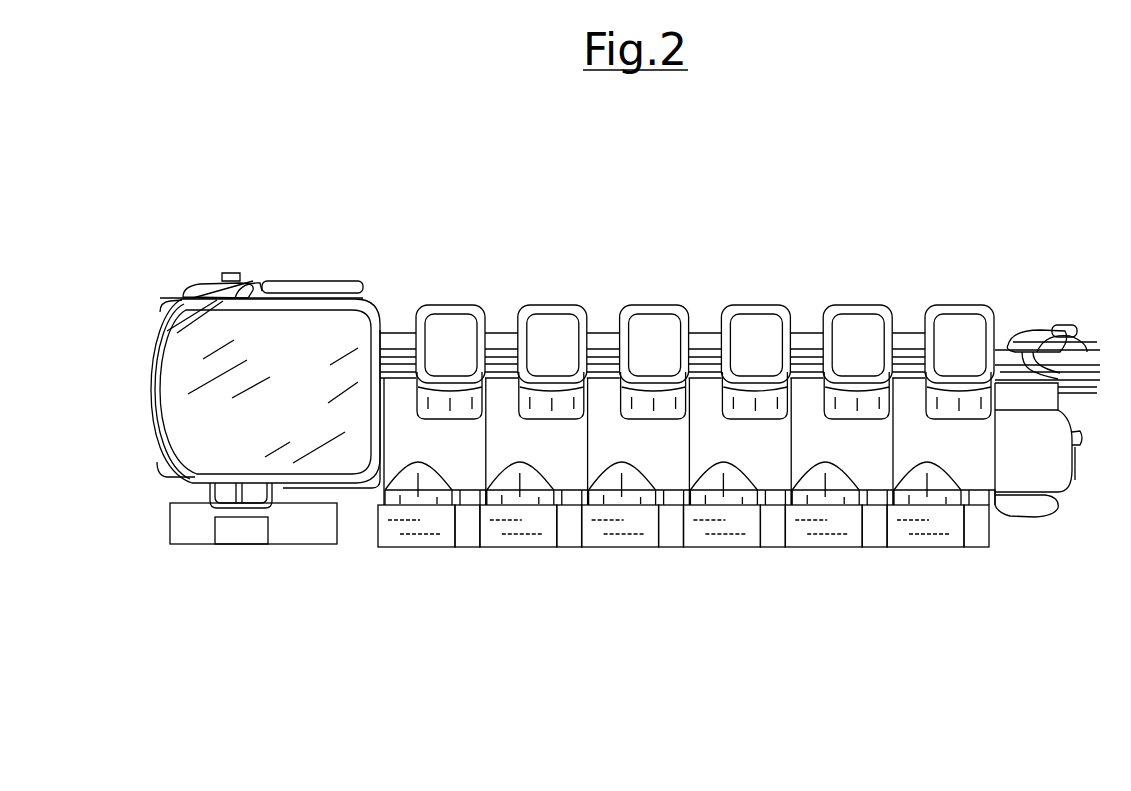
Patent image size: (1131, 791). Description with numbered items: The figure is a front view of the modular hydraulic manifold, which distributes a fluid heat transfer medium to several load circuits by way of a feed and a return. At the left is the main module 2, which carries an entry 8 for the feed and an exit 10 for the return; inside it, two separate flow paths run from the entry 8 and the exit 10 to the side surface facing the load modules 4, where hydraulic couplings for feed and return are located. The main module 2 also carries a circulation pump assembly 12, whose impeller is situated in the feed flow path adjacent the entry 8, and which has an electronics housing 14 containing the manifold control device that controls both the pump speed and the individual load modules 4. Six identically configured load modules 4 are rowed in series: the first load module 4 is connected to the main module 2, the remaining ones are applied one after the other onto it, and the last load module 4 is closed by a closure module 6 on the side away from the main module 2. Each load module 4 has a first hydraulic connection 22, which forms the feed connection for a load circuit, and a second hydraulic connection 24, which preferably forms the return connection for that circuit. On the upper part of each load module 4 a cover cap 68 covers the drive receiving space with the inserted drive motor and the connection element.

The main module 2 is at (259, 277).
The load module 4 is at (468, 294).
The closure module 6 is at (1040, 306).
The entry 8 is at (193, 545).
The exit 10 is at (308, 545).
The circulation pump assembly 12 is at (182, 430).
The electronics housing 14 is at (312, 408).
The first hydraulic connection 22 is at (467, 548).
The second hydraulic connection 24 is at (413, 548).
The cover cap 68 is at (441, 313).